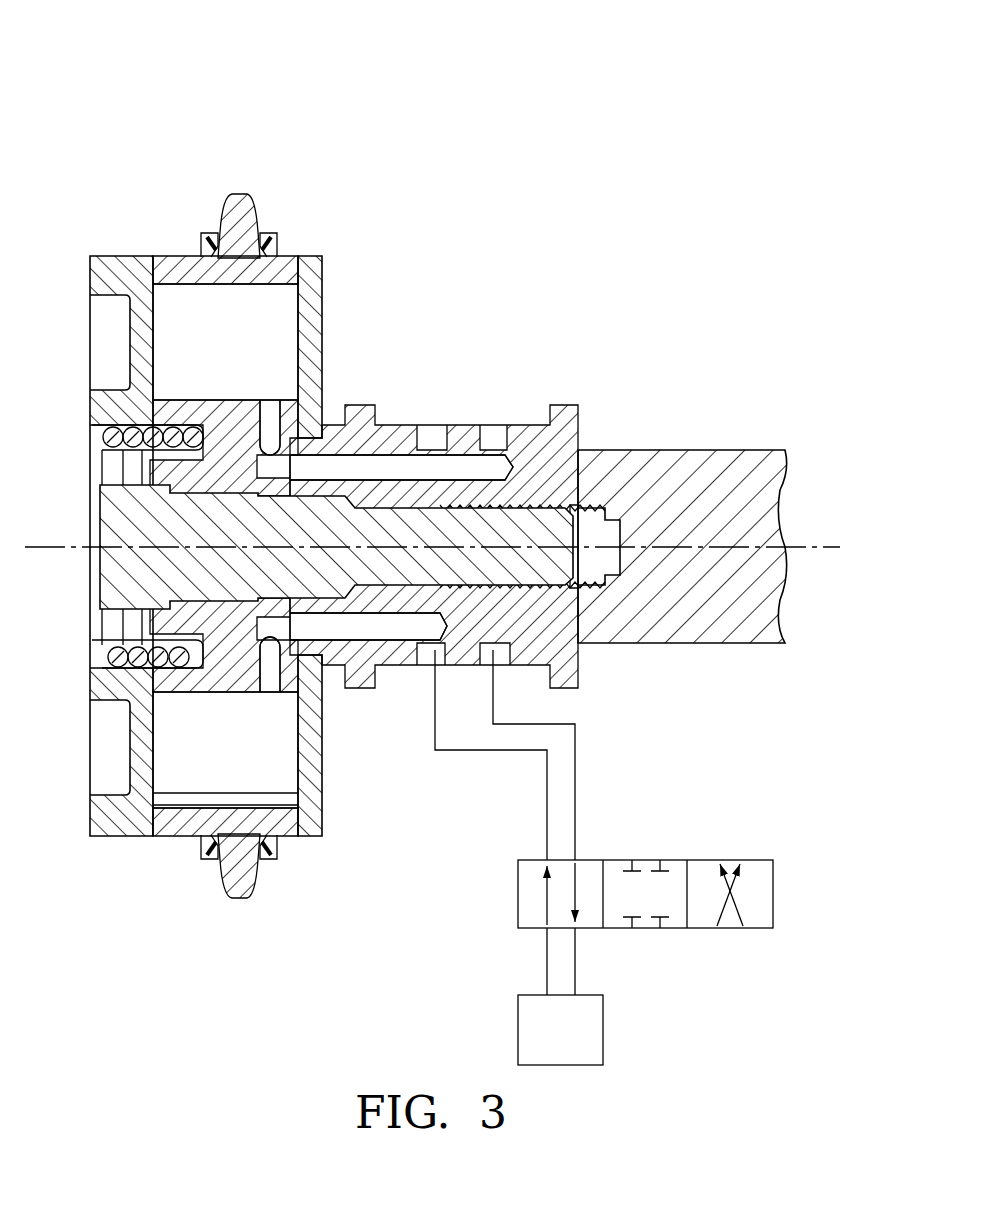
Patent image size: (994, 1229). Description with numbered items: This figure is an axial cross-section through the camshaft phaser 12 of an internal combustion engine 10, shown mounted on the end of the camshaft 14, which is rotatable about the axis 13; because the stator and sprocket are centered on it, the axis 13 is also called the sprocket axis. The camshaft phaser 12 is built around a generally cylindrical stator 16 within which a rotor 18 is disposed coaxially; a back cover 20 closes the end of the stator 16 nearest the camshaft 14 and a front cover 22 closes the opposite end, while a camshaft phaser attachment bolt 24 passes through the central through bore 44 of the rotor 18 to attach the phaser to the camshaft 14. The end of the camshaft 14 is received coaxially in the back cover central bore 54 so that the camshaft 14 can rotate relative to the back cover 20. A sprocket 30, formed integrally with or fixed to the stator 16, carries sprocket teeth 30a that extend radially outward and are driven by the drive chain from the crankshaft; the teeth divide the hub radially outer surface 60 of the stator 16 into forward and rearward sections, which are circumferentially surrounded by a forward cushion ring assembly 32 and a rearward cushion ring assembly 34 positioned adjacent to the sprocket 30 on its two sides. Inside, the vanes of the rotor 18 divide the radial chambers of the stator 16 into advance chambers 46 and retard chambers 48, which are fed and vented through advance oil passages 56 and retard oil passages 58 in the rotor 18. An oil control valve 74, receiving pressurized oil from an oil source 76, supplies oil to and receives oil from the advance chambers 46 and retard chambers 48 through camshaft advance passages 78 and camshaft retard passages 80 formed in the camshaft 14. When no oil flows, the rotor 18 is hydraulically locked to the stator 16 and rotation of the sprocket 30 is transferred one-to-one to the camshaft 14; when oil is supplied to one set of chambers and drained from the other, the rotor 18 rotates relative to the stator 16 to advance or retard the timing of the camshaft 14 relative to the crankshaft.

The internal combustion engine 10 is at (633, 857).
The camshaft phaser 12 is at (429, 457).
The axis 13 is at (817, 549).
The camshaft 14 is at (727, 450).
The stator 16 is at (195, 374).
The rotor 18 is at (190, 797).
The back cover 20 is at (318, 300).
The front cover 22 is at (115, 257).
The camshaft phaser attachment bolt 24 is at (113, 483).
The sprocket 30 is at (259, 455).
The sprocket teeth 30a is at (240, 192).
The forward cushion ring assembly 32 is at (208, 226).
The rearward cushion ring assembly 34 is at (272, 226).
The central through bore 44 is at (238, 592).
The advance chambers 46 is at (183, 750).
The retard chambers 48 is at (170, 333).
The back cover central bore 54 is at (323, 425).
The advance oil passages 56 is at (275, 693).
The retard oil passages 58 is at (267, 407).
The hub radially outer surface 60 is at (147, 546).
The oil control valve 74 is at (670, 833).
The oil source 76 is at (577, 1045).
The camshaft advance passages 78 is at (363, 628).
The camshaft retard passages 80 is at (477, 468).